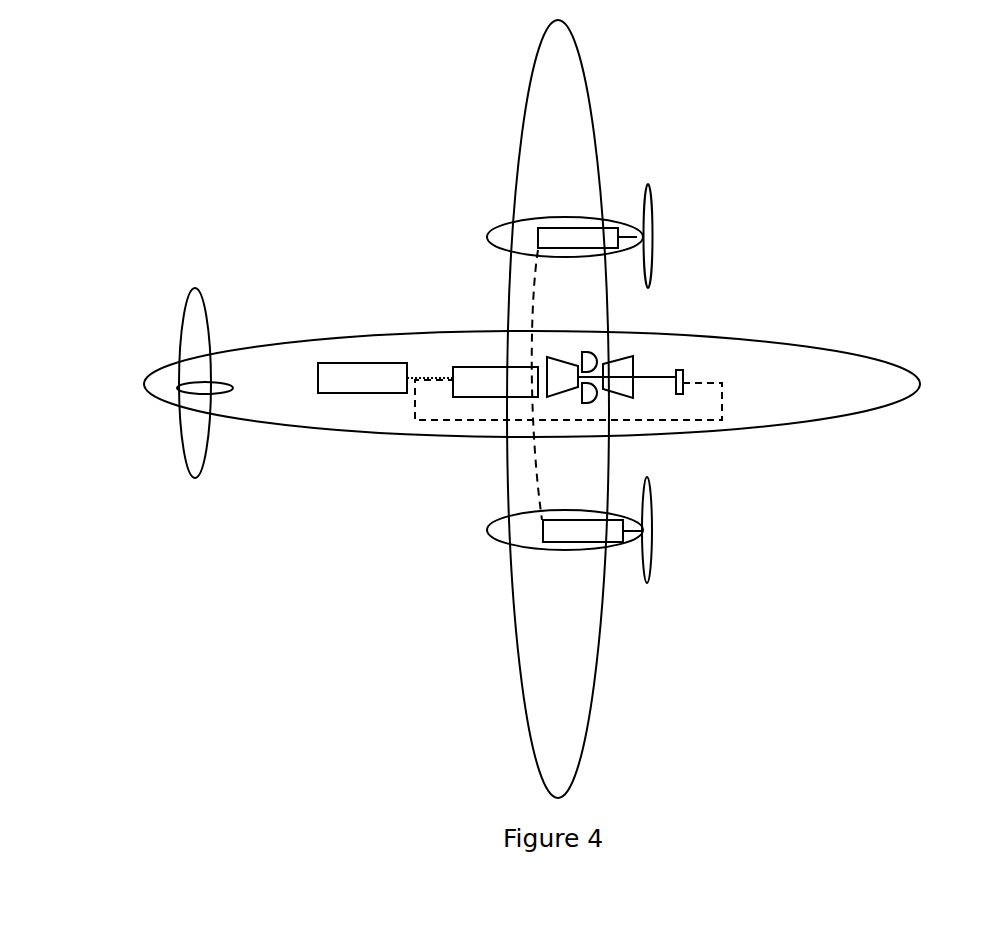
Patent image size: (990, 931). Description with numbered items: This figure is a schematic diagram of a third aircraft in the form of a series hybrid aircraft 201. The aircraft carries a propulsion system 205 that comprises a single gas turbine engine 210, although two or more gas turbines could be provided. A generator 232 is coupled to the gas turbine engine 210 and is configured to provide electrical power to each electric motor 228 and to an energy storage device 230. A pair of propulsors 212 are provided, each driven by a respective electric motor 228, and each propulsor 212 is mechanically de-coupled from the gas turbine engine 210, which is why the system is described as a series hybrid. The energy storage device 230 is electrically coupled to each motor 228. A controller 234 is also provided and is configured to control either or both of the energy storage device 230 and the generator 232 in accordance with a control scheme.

The series hybrid aircraft 201 is at (840, 279).
The propulsion system 205 is at (486, 162).
The gas turbine engine 210 is at (560, 353).
The propulsor 212 is at (648, 183).
The electric motor 228 is at (578, 228).
The energy storage device 230 is at (490, 397).
The generator 232 is at (682, 370).
The controller 234 is at (357, 393).